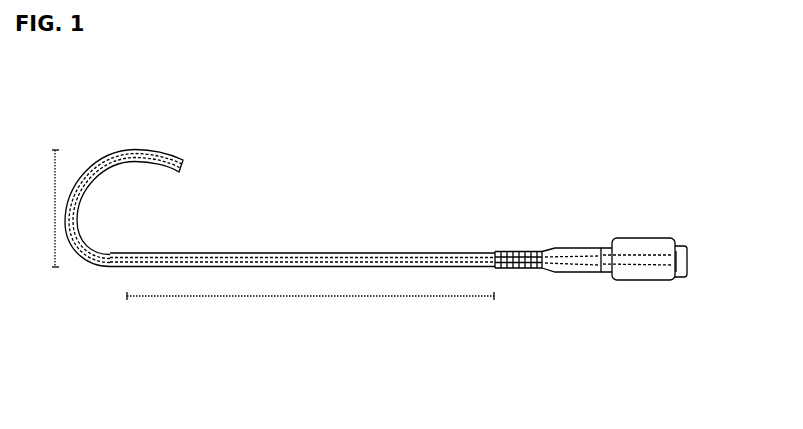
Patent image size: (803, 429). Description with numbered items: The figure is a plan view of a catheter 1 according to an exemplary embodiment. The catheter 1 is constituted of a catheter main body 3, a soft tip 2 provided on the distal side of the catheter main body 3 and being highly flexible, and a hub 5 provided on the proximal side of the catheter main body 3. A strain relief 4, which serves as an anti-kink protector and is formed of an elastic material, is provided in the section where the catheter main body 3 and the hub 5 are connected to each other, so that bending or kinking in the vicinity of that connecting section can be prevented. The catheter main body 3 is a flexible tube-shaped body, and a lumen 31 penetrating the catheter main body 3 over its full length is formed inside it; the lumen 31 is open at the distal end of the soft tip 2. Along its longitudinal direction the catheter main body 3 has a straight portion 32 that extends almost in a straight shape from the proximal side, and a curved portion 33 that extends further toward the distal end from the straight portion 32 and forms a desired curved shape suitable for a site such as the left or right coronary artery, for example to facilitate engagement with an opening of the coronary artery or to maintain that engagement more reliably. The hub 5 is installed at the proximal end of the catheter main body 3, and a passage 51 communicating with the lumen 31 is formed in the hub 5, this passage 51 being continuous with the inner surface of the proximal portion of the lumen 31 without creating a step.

The catheter 1 is at (92, 115).
The soft tip 2 is at (184, 163).
The catheter main body 3 is at (320, 252).
The lumen 31 is at (284, 252).
The straight portion 32 is at (306, 291).
The curved portion 33 is at (55, 207).
The strain relief 4 is at (563, 248).
The hub 5 is at (633, 238).
The passage 51 is at (672, 245).